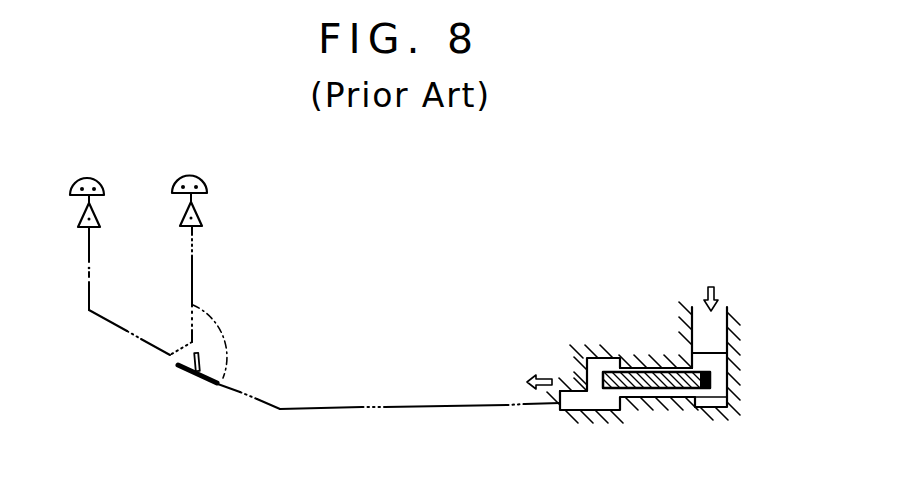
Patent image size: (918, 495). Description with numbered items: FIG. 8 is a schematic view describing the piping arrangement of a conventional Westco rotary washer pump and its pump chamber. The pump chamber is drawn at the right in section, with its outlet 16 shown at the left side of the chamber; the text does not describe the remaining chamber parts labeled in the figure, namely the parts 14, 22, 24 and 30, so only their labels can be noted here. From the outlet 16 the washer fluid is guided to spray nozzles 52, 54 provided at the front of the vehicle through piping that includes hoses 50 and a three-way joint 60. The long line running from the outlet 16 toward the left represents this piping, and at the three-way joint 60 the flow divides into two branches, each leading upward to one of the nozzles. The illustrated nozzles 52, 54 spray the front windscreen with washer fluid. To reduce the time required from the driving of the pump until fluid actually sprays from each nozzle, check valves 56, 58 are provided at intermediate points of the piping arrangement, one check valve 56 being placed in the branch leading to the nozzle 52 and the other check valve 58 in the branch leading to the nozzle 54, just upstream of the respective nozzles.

The inlet passage 14 is at (700, 308).
The outlet 16 is at (561, 410).
The measurement chamber 22 is at (650, 375).
The sample holder / light transmitting member 24 is at (712, 363).
The chamber wall 30 is at (713, 401).
The hose 50 is at (195, 333).
The spray nozzle 52 is at (96, 178).
The spray nozzle 54 is at (185, 178).
The check valve 56 is at (80, 213).
The check valve 58 is at (204, 213).
The three-way joint 60 is at (185, 375).